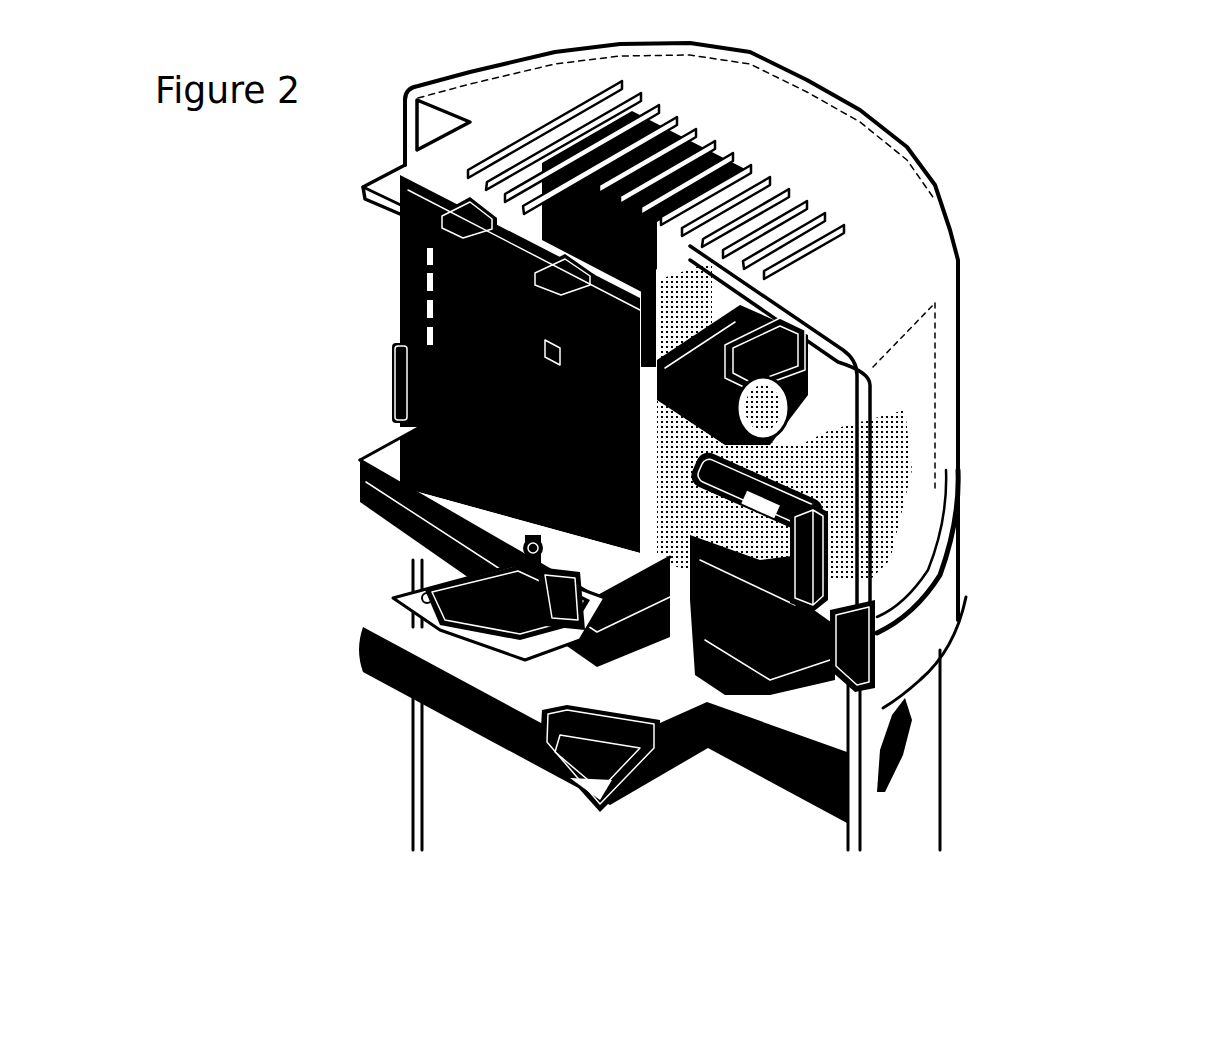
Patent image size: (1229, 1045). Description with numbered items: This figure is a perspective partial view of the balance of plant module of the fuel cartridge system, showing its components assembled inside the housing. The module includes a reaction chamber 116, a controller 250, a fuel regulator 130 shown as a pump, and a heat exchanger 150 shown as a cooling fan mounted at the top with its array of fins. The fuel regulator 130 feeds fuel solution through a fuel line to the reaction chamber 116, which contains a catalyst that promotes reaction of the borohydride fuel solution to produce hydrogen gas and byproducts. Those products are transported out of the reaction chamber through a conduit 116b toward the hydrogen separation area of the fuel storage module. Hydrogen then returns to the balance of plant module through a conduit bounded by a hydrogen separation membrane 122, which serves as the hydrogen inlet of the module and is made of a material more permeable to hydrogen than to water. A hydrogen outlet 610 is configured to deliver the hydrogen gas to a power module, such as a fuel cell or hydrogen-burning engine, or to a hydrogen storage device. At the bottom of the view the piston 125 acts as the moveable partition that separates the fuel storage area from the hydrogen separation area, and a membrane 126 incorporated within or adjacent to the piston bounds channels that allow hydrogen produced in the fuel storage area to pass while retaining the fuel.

The reaction chamber 116 is at (790, 502).
The conduit 116b is at (817, 585).
The hydrogen separation membrane 122 is at (470, 625).
The piston 125 is at (673, 762).
The membrane 126 is at (507, 758).
The fuel regulator 130 is at (772, 406).
The heat exchanger 150 is at (707, 302).
The controller 250 is at (403, 315).
The hydrogen outlet 610 is at (525, 558).